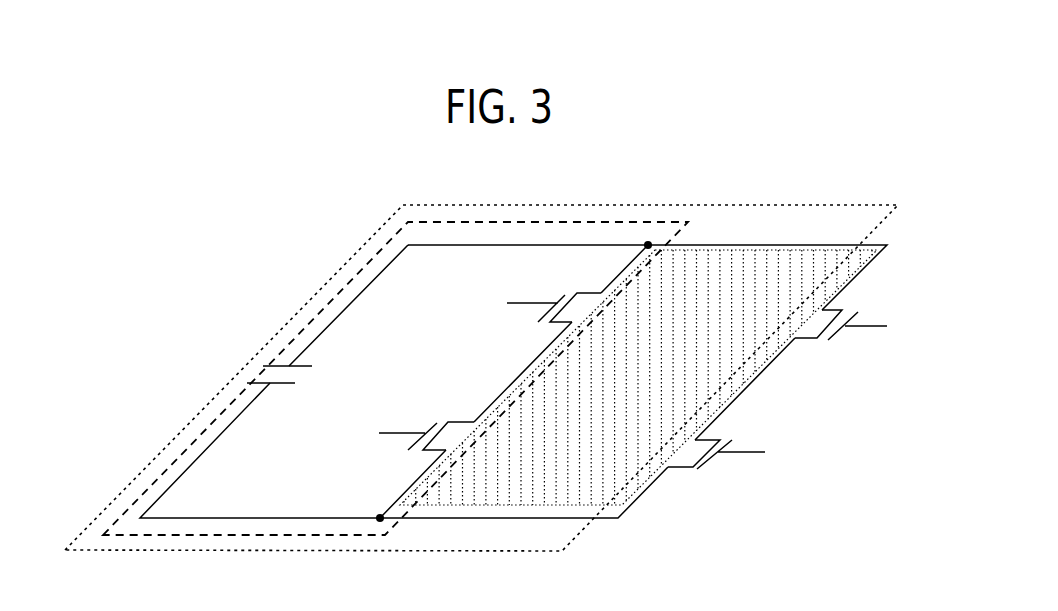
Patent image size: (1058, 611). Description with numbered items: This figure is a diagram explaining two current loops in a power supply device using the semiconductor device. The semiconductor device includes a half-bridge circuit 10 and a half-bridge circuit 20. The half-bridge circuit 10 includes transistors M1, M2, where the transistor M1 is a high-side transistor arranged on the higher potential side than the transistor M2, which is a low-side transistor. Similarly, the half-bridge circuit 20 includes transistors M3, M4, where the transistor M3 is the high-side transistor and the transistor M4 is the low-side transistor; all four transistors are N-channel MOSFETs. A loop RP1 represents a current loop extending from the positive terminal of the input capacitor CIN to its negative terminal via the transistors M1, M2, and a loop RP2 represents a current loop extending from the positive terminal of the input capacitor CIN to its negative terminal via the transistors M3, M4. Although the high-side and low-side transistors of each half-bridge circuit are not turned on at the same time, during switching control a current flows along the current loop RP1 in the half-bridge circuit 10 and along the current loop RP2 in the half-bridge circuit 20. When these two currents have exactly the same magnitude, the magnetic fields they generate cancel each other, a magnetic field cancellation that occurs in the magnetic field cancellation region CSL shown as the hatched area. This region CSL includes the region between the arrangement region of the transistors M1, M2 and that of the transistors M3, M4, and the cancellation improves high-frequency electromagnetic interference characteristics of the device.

The half-bridge circuit 10 is at (471, 300).
The half-bridge circuit 20 is at (890, 312).
The magnetic field cancellation region CSL is at (763, 247).
The input capacitor CIN is at (313, 377).
The current loop RP1 is at (507, 407).
The current loop RP2 is at (742, 393).
The transistor M1 is at (543, 312).
The transistor M2 is at (413, 437).
The transistor M3 is at (810, 342).
The transistor M4 is at (683, 470).